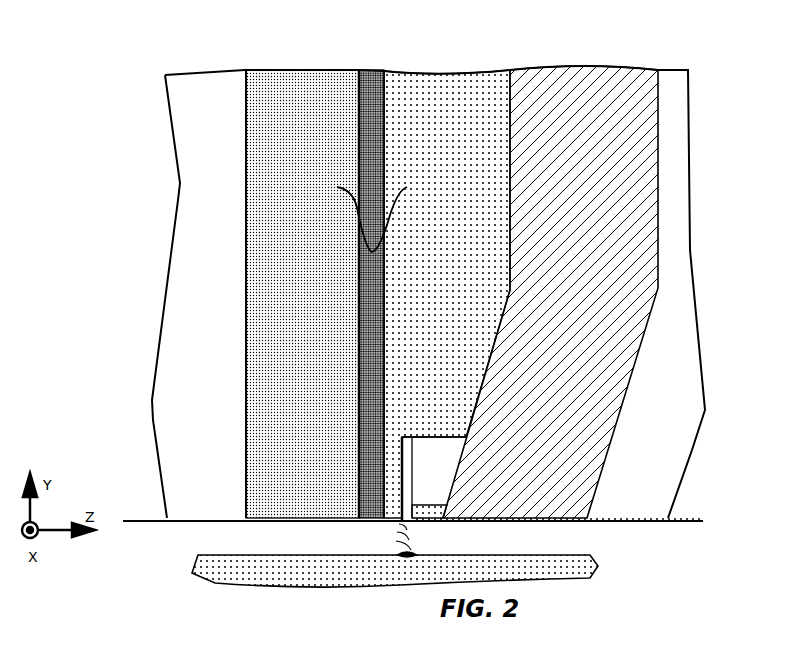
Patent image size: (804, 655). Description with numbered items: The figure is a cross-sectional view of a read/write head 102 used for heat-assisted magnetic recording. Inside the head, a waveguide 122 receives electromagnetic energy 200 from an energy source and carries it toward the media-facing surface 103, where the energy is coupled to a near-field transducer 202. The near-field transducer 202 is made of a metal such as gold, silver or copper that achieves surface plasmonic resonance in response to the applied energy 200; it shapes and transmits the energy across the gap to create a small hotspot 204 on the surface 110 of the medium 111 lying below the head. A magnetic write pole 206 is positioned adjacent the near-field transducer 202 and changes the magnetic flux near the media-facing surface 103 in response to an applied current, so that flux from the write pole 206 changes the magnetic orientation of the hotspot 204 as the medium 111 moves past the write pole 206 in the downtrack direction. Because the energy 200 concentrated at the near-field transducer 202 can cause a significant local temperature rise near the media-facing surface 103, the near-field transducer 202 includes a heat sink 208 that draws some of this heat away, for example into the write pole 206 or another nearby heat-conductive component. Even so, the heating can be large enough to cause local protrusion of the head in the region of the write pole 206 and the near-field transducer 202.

The read/write head 102 is at (153, 49).
The waveguide 122 is at (503, 45).
The magnetic write pole 206 is at (595, 65).
The electromagnetic energy 200 is at (356, 213).
The near-field transducer 202 is at (392, 528).
The heat sink 208 is at (426, 500).
The hotspot 204 is at (407, 557).
The surface 110 is at (557, 568).
The media-facing surface 103 is at (630, 522).
The medium 111 is at (577, 562).